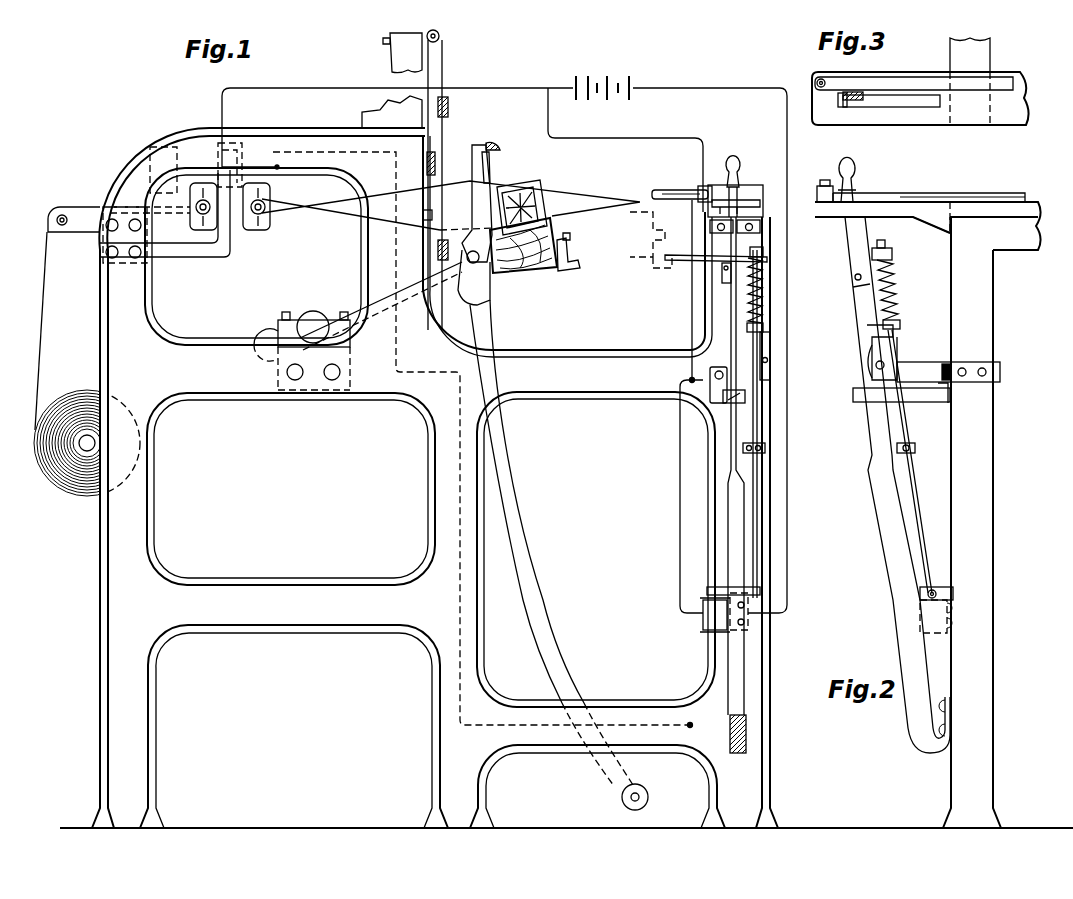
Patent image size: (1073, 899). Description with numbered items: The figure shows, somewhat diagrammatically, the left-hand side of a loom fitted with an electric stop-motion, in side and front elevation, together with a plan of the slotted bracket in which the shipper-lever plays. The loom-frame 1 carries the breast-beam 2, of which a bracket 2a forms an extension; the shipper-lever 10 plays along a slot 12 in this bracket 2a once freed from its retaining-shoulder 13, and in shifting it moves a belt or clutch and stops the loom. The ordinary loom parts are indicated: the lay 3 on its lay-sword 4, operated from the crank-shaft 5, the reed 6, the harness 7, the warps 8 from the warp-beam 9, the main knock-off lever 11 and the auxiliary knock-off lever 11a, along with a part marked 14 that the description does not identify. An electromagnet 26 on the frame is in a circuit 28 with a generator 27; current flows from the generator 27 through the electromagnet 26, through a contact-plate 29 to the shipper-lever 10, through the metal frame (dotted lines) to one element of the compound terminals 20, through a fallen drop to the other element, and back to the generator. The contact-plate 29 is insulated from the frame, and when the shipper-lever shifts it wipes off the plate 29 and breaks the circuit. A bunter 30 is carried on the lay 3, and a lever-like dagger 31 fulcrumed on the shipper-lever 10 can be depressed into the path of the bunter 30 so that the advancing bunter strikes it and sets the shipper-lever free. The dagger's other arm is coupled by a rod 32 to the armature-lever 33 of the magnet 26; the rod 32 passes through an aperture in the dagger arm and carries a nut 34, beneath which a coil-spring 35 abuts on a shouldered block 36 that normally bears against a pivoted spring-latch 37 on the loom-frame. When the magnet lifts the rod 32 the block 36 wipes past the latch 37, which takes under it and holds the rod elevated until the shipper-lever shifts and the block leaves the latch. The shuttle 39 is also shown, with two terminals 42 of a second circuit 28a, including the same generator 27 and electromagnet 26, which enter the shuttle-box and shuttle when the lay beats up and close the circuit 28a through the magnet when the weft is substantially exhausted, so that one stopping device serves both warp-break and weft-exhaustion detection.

In FIG. 1, the loom-frame 1 is at (278, 588).
In FIG. 2, the loom-frame 1 is at (990, 490).
In FIG. 2, the breast-beam 2 is at (928, 226).
In FIG. 1, the bracket 2a is at (764, 212).
In FIG. 2, the bracket 2a is at (934, 222).
In FIG. 3, the bracket 2a is at (915, 72).
In FIG. 1, the lay 3 is at (525, 272).
In FIG. 1, the lay-sword 4 is at (567, 655).
In FIG. 1, the crank-shaft 5 is at (318, 318).
In FIG. 1, the reed 6 is at (484, 202).
In FIG. 1, the harness 7 is at (440, 135).
In FIG. 1, the warps 8 is at (589, 205).
In FIG. 1, the warp-beam 9 is at (40, 462).
In FIG. 1, the shipper-lever 10 is at (731, 352).
In FIG. 2, the shipper-lever 10 is at (860, 258).
In FIG. 3, the shipper-lever 10 is at (840, 105).
In FIG. 1, the main knock-off lever 11 is at (718, 208).
In FIG. 2, the main knock-off lever 11 is at (958, 200).
In FIG. 1, the auxiliary knock-off lever 11a is at (714, 182).
In FIG. 2, the auxiliary knock-off lever 11a is at (908, 192).
In FIG. 3, the auxiliary knock-off lever 11a is at (975, 82).
In FIG. 3, the slot 12 is at (900, 107).
In FIG. 3, the retaining-shoulder 13 is at (858, 100).
In FIG. 1, the rod 14 is at (215, 260).
In FIG. 1, the compound terminals 20 is at (210, 186).
In FIG. 1, the electromagnet 26 is at (703, 618).
In FIG. 2, the electromagnet 26 is at (918, 613).
In FIG. 1, the generator 27 is at (610, 78).
In FIG. 1, the circuit 28 is at (322, 83).
In FIG. 1, the circuit 28a is at (680, 322).
In FIG. 1, the contact-plate 29 is at (712, 400).
In FIG. 2, the contact-plate 29 is at (880, 402).
In FIG. 1, the bunter 30 is at (575, 270).
In FIG. 1, the dagger 31 is at (680, 262).
In FIG. 1, the rod 32 is at (757, 530).
In FIG. 2, the rod 32 is at (905, 490).
In FIG. 1, the armature-lever 33 is at (707, 590).
In FIG. 2, the armature-lever 33 is at (955, 590).
In FIG. 1, the nut 34 is at (763, 254).
In FIG. 2, the nut 34 is at (878, 254).
In FIG. 1, the coil-spring 35 is at (762, 283).
In FIG. 2, the coil-spring 35 is at (892, 295).
In FIG. 1, the shouldered block 36 is at (764, 326).
In FIG. 2, the shouldered block 36 is at (900, 324).
In FIG. 1, the spring-latch 37 is at (770, 345).
In FIG. 2, the spring-latch 37 is at (870, 333).
In FIG. 1, the shuttle 39 is at (520, 195).
In FIG. 1, the terminals 42 is at (680, 190).